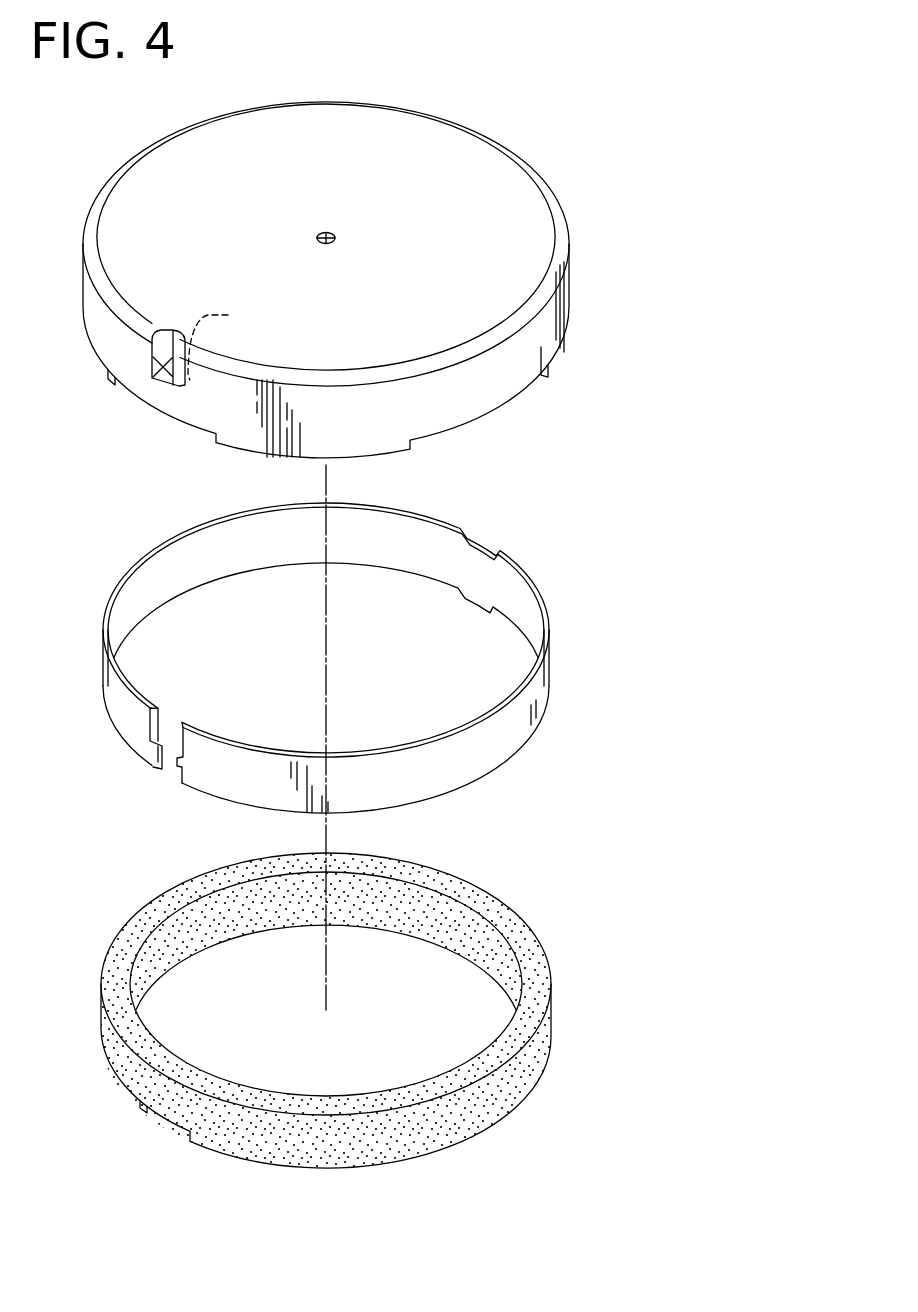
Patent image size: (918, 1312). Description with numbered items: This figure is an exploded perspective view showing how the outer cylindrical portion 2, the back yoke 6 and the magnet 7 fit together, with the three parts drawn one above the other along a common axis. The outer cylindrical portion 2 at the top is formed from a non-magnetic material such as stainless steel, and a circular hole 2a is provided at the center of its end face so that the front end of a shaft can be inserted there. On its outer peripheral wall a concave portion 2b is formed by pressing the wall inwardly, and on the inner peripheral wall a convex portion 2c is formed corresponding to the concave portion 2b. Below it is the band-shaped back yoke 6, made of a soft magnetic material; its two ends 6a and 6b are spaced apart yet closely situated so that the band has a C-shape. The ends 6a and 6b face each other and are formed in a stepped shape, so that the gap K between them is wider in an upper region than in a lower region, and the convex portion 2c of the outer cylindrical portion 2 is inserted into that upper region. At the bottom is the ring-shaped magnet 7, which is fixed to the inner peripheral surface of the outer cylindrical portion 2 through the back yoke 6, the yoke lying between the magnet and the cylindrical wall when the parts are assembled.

The outer cylindrical portion 2 is at (326, 273).
The circular hole 2a is at (330, 248).
The concave portion 2b is at (158, 388).
The convex portion 2c is at (223, 341).
The back yoke 6 is at (341, 664).
The end of back yoke 6a is at (150, 740).
The end of back yoke 6b is at (182, 733).
The gap K is at (150, 747).
The magnet 7 is at (495, 908).